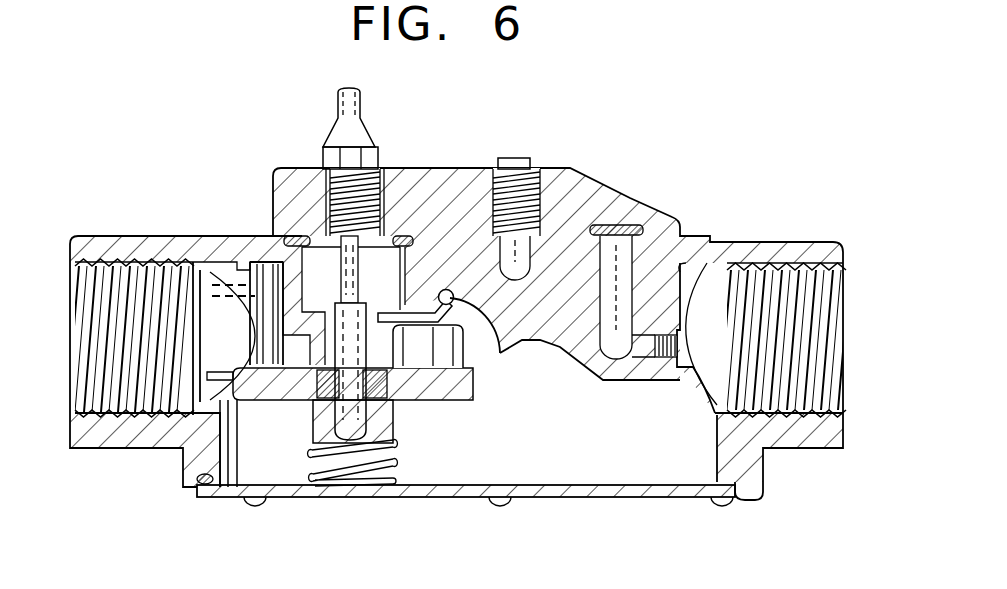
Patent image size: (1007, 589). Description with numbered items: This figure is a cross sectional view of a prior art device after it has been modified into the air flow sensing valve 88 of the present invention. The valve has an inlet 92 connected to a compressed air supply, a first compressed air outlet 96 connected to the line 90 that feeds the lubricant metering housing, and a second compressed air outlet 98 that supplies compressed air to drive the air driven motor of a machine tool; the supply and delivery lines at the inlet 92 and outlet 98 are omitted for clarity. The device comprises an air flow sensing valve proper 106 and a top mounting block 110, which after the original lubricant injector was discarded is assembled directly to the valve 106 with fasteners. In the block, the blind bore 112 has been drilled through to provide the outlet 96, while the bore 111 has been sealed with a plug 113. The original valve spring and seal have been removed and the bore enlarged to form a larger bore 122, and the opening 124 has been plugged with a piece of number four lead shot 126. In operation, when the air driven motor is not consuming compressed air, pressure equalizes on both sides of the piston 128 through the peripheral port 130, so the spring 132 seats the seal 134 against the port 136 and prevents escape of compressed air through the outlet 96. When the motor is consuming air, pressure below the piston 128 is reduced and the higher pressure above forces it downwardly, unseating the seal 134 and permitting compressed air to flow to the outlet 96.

The air flow sensing valve 88 is at (222, 190).
The line 90 is at (363, 98).
The inlet 92 is at (72, 412).
The first compressed air outlet 96 is at (327, 177).
The second compressed air outlet 98 is at (843, 412).
The air flow sensing valve proper 106 is at (868, 500).
The top mounting block 110 is at (864, 155).
The bore 111 is at (533, 180).
The blind bore 112 is at (382, 193).
The plug 113 is at (513, 157).
The larger bore 122 is at (330, 400).
The opening 124 is at (493, 355).
The lead shot 126 is at (500, 352).
The piston 128 is at (470, 398).
The peripheral port 130 is at (227, 407).
The spring 132 is at (395, 461).
The seal 134 is at (403, 405).
The port 136 is at (428, 346).